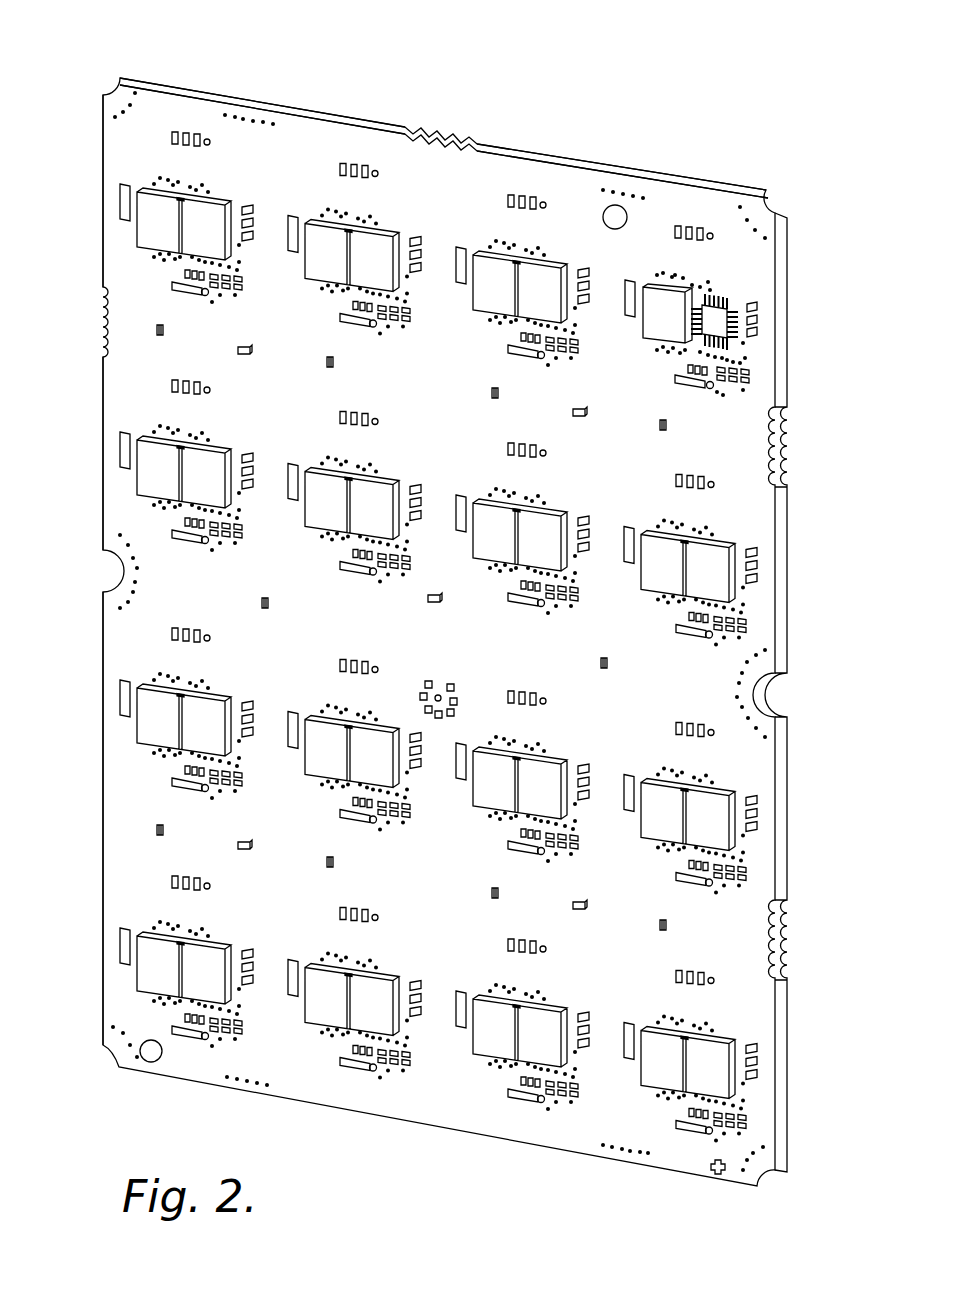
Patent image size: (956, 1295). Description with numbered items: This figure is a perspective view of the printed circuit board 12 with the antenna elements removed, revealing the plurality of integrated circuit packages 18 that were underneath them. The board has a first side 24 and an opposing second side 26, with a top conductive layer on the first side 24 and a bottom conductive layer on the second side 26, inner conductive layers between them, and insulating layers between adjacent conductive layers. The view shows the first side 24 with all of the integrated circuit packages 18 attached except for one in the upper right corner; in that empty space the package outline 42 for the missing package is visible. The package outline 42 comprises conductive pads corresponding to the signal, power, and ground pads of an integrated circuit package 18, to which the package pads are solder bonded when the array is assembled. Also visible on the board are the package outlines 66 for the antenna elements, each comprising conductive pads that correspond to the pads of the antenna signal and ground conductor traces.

The printed circuit board 12 is at (96, 411).
The integrated circuit package 18 is at (158, 267).
The first side 24 is at (110, 643).
The second side 26 is at (148, 80).
The package outline 42 is at (733, 301).
The package outline 66 is at (694, 222).